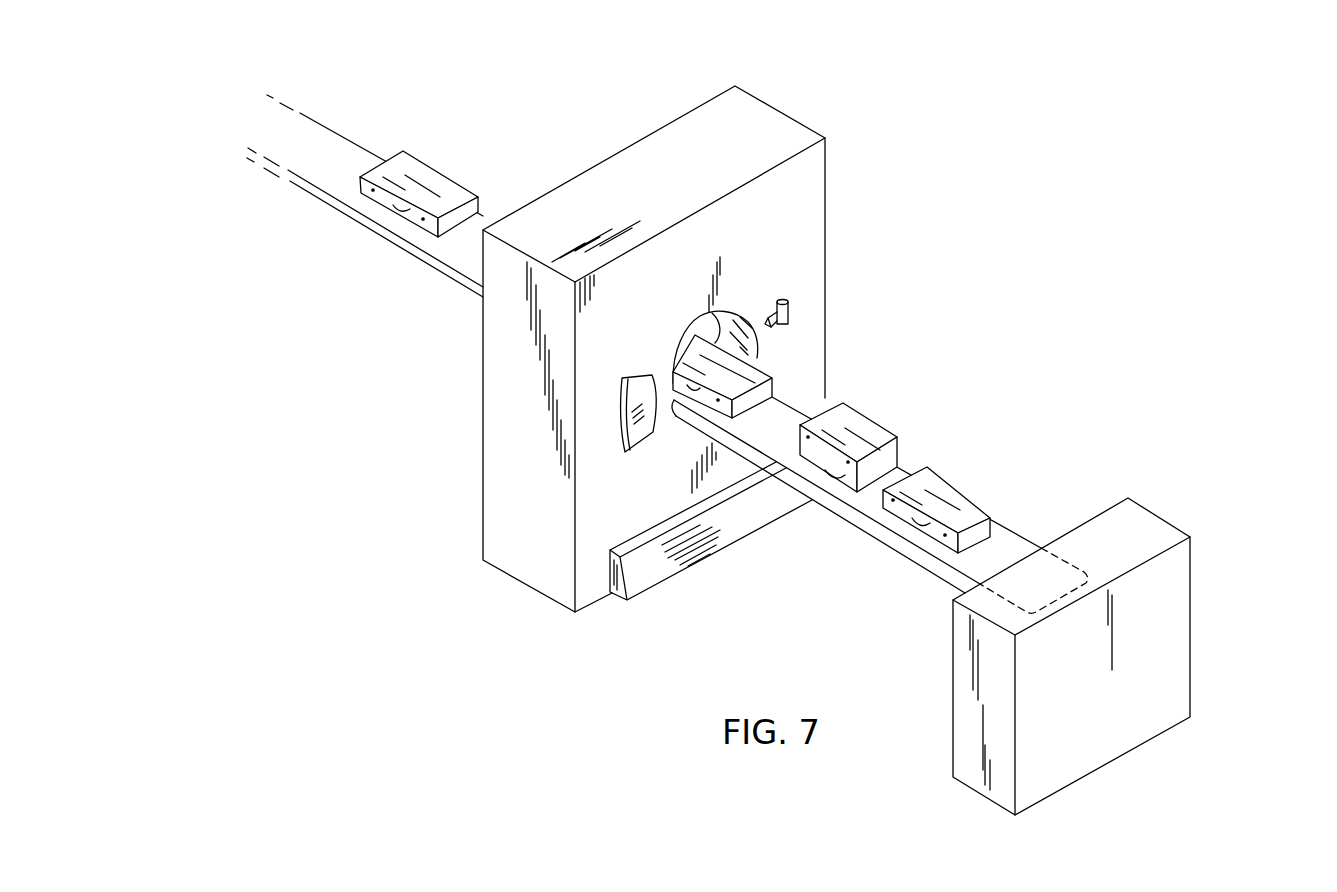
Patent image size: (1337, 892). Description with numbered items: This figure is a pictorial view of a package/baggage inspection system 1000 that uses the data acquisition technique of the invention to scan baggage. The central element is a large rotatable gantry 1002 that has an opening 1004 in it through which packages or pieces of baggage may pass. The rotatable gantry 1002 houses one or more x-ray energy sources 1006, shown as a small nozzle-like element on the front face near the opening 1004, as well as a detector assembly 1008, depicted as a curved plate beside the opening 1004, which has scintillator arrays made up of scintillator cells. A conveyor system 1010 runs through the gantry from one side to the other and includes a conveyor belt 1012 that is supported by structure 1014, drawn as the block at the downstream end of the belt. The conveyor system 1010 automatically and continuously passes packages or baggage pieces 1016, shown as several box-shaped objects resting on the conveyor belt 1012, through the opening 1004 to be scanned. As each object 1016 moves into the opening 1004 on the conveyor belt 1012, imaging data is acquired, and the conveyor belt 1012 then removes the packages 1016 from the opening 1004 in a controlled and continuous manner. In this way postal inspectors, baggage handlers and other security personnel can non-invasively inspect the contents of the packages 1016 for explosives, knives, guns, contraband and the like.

The package/baggage inspection system 1000 is at (1068, 374).
The rotatable gantry 1002 is at (802, 233).
The opening 1004 is at (750, 355).
The x-ray energy source 1006 is at (790, 312).
The detector assembly 1008 is at (637, 396).
The conveyor system 1010 is at (296, 214).
The conveyor belt 1012 is at (458, 250).
The structure 1014 is at (1192, 598).
The packages or baggage pieces 1016 is at (420, 180).